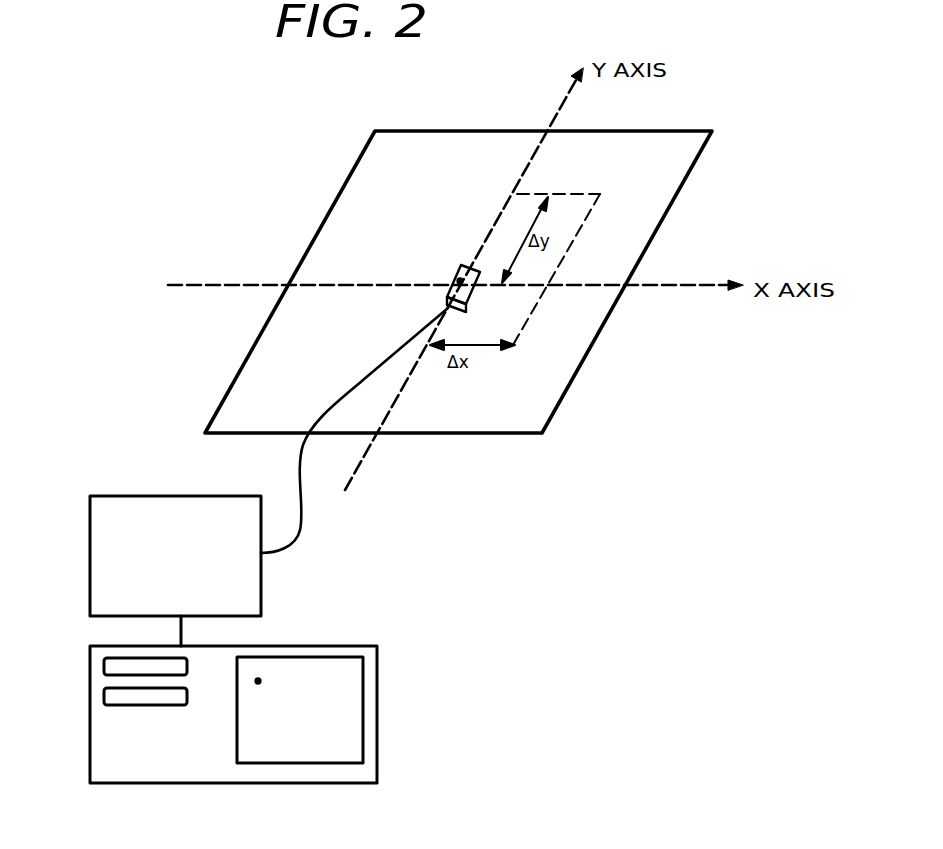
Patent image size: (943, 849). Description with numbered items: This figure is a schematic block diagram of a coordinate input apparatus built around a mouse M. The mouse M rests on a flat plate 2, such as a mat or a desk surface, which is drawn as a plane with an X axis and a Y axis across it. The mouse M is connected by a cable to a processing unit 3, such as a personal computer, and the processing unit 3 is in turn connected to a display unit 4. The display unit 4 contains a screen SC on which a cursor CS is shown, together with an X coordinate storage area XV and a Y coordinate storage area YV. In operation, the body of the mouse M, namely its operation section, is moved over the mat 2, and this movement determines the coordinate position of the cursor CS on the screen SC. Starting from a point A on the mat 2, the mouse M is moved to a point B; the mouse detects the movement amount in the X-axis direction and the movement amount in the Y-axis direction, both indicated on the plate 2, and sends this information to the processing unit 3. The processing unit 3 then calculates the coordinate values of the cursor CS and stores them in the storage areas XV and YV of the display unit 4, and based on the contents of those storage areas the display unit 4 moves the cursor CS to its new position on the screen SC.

The flat plate 2 is at (573, 383).
The processing unit 3 is at (222, 496).
The display unit 4 is at (332, 646).
The point A is at (459, 278).
The mouse M is at (445, 293).
The point B is at (566, 264).
The X coordinate storage area XV is at (108, 667).
The Y coordinate storage area YV is at (108, 698).
The screen SC is at (363, 683).
The cursor CS is at (258, 684).